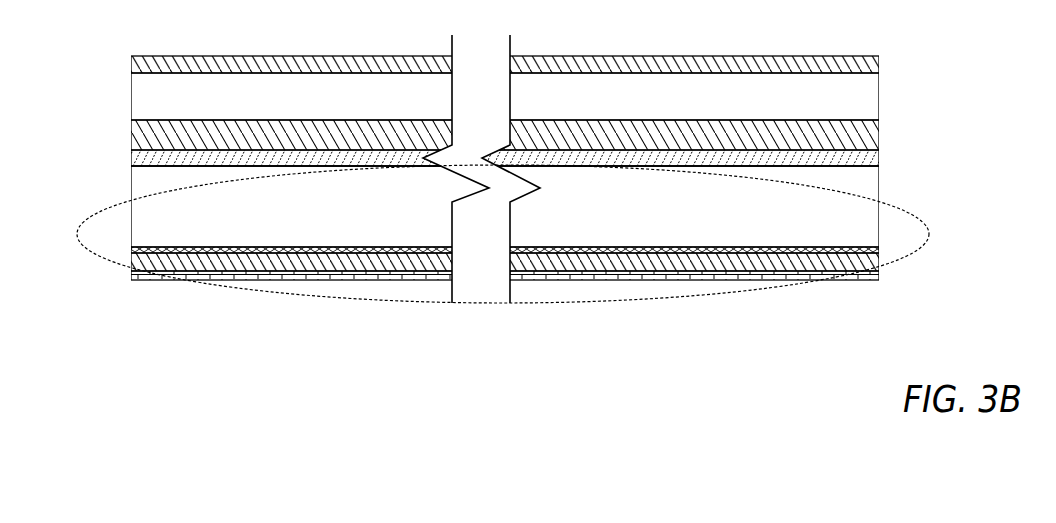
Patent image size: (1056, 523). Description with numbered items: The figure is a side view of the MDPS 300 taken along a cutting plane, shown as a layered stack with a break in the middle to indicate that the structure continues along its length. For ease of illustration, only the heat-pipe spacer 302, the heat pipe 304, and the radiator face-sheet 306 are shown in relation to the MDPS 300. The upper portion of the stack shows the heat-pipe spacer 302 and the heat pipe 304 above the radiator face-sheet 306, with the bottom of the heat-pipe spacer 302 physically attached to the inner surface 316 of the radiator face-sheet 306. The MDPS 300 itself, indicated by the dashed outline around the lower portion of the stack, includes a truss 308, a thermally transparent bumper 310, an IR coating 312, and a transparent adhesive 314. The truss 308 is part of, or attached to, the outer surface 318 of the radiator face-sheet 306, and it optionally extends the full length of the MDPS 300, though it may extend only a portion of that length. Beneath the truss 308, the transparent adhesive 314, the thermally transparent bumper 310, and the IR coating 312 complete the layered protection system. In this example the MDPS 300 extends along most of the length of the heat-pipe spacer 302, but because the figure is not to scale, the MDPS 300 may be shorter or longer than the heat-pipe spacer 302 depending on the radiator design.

The MDPS 300 is at (322, 297).
The heat-pipe spacer 302 is at (826, 56).
The heat pipe 304 is at (278, 104).
The radiator face-sheet 306 is at (879, 152).
The truss 308 is at (311, 216).
The thermally transparent bumper 310 is at (880, 265).
The IR coating 312 is at (880, 280).
The transparent adhesive 314 is at (880, 250).
The inner surface 316 is at (848, 152).
The outer surface 318 is at (858, 166).